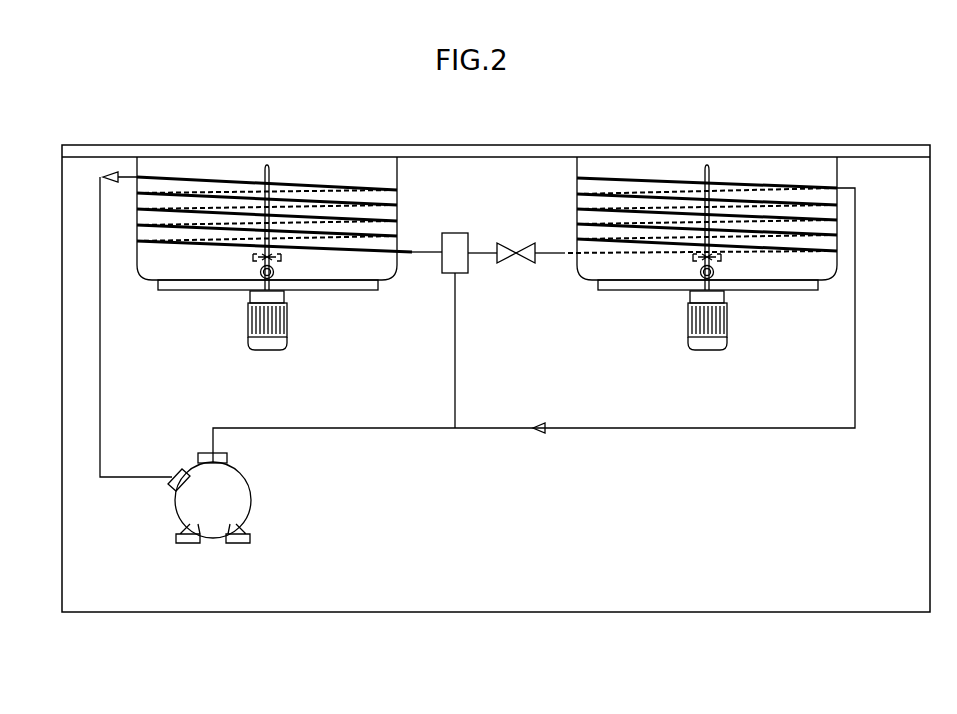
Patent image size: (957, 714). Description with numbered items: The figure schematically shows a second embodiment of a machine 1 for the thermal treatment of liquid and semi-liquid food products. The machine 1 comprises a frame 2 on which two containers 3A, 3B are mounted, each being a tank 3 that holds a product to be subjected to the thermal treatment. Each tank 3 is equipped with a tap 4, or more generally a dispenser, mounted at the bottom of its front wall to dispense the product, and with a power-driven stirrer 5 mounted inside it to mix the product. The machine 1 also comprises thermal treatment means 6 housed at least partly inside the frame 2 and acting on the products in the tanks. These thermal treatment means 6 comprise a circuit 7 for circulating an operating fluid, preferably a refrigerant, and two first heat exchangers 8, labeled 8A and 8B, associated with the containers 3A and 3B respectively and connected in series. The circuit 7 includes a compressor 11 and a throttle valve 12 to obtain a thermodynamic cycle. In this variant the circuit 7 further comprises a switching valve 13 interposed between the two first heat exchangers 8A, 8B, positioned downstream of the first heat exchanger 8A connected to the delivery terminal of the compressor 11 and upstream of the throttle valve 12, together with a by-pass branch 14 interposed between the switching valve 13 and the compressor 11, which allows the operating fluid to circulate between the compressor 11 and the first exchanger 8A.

The machine 1 is at (836, 111).
The frame 2 is at (720, 550).
The tank 3 is at (487, 190).
The first container 3A is at (332, 170).
The second container 3B is at (579, 165).
The tap 4 is at (274, 272).
The power-driven stirrer 5 is at (255, 255).
The thermal treatment means 6 is at (312, 494).
The circuit 7 is at (452, 437).
The first heat exchanger 8 is at (487, 170).
The first heat exchanger 8A is at (158, 176).
The second heat exchanger 8B is at (664, 180).
The compressor 11 is at (205, 503).
The throttle valve 12 is at (516, 246).
The switching valve 13 is at (453, 242).
The by-pass branch 14 is at (457, 367).